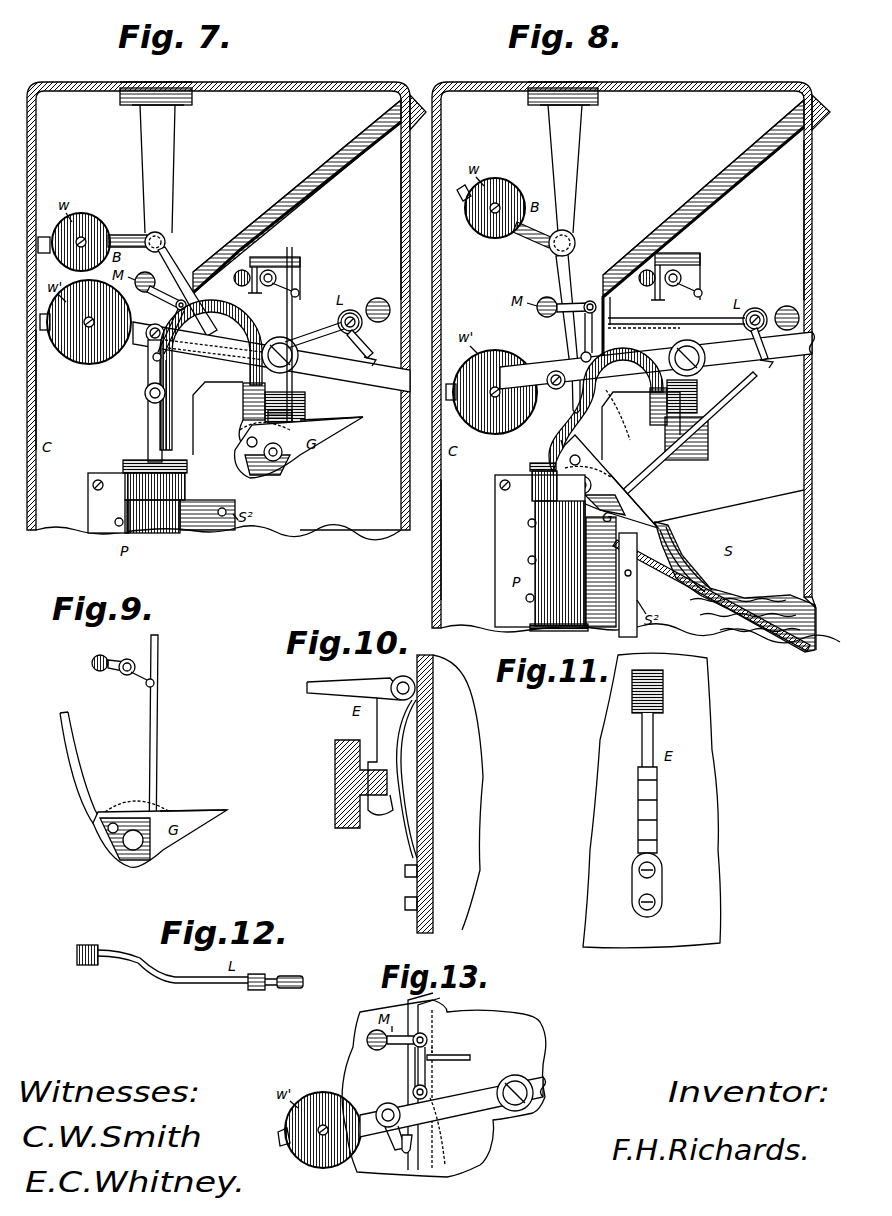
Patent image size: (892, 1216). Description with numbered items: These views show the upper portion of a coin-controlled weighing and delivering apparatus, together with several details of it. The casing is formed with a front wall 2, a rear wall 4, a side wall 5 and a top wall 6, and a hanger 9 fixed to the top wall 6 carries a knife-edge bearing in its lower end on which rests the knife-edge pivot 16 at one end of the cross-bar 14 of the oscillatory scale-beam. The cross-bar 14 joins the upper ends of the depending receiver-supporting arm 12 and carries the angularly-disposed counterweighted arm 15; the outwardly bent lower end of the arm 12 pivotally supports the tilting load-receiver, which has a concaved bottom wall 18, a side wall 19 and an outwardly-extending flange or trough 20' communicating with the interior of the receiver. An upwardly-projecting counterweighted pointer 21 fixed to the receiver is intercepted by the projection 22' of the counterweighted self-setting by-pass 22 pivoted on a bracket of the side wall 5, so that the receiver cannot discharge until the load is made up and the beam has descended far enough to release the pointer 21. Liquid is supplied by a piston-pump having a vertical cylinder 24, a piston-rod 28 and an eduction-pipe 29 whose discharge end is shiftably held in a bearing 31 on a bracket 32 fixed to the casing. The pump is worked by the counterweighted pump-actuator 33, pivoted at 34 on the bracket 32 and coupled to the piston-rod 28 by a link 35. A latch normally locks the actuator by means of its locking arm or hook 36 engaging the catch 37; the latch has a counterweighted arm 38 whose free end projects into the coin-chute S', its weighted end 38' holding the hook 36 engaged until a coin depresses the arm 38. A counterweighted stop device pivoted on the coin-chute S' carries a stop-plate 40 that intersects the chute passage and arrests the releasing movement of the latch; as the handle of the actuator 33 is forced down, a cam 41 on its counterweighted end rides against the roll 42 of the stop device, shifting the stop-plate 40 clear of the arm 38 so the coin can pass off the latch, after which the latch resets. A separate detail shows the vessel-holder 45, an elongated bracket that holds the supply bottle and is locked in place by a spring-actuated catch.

In FIG. 7, the front wall 2 is at (401, 208).
In FIG. 8, the front wall 2 is at (804, 216).
In FIG. 7, the rear wall 4 is at (37, 370).
In FIG. 8, the rear wall 4 is at (441, 500).
In FIG. 10, the rear wall 4 is at (441, 793).
In FIG. 11, the rear wall 4 is at (706, 800).
In FIG. 7, the side wall 5 is at (357, 529).
In FIG. 8, the side wall 5 is at (742, 642).
In FIG. 13, the side wall 5 is at (520, 1038).
In FIG. 7, the top wall 6 is at (246, 86).
In FIG. 8, the top wall 6 is at (664, 86).
In FIG. 7, the hanger 9 is at (168, 146).
In FIG. 8, the hanger 9 is at (578, 150).
In FIG. 7, the receiver-supporting arm 12 is at (236, 424).
In FIG. 8, the receiver-supporting arm 12 is at (555, 430).
In FIG. 9, the receiver-supporting arm 12 is at (76, 762).
In FIG. 7, the cross-bar 14 is at (160, 236).
In FIG. 8, the cross-bar 14 is at (567, 238).
In FIG. 7, the counterweighted arm 15 is at (118, 236).
In FIG. 8, the counterweighted arm 15 is at (528, 236).
In FIG. 7, the knife-edge pivot 16 is at (162, 244).
In FIG. 8, the knife-edge pivot 16 is at (573, 246).
In FIG. 7, the concaved bottom wall 18 is at (287, 466).
In FIG. 8, the concaved bottom wall 18 is at (575, 498).
In FIG. 9, the concaved bottom wall 18 is at (165, 846).
In FIG. 7, the side wall 19 is at (345, 428).
In FIG. 8, the side wall 19 is at (633, 513).
In FIG. 9, the side wall 19 is at (192, 818).
In FIG. 7, the flange or trough 20' is at (239, 463).
In FIG. 8, the flange or trough 20' is at (604, 451).
In FIG. 9, the flange or trough 20' is at (97, 844).
In FIG. 7, the pointer 21 is at (293, 262).
In FIG. 8, the pointer 21 is at (740, 392).
In FIG. 9, the pointer 21 is at (157, 760).
In FIG. 7, the by-pass 22 is at (271, 261).
In FIG. 8, the by-pass 22 is at (669, 264).
In FIG. 9, the by-pass 22 is at (120, 675).
In FIG. 7, the projection 22' is at (306, 279).
In FIG. 8, the projection 22' is at (709, 283).
In FIG. 9, the projection 22' is at (134, 697).
In FIG. 7, the cylinder 24 is at (150, 534).
In FIG. 8, the cylinder 24 is at (528, 560).
In FIG. 7, the piston-rod 28 is at (148, 422).
In FIG. 7, the eduction-pipe 29 is at (163, 442).
In FIG. 7, the bearing 31 is at (243, 398).
In FIG. 8, the bearing 31 is at (650, 398).
In FIG. 7, the bracket 32 is at (265, 425).
In FIG. 7, the pump-actuator 33 is at (384, 380).
In FIG. 8, the pump-actuator 33 is at (704, 338).
In FIG. 13, the pump-actuator 33 is at (486, 1112).
In FIG. 7, the pivot 34 is at (292, 365).
In FIG. 8, the pivot 34 is at (674, 350).
In FIG. 13, the pivot 34 is at (516, 1080).
In FIG. 7, the link 35 is at (150, 340).
In FIG. 8, the link 35 is at (553, 388).
In FIG. 13, the link 35 is at (388, 1140).
In FIG. 7, the locking arm or hook 36 is at (366, 350).
In FIG. 8, the locking arm or hook 36 is at (770, 356).
In FIG. 7, the catch 37 is at (348, 332).
In FIG. 8, the catch 37 is at (748, 330).
In FIG. 7, the counterweighted arm 38 is at (319, 329).
In FIG. 8, the counterweighted arm 38 is at (676, 311).
In FIG. 12, the counterweighted arm 38 is at (162, 972).
In FIG. 13, the counterweighted arm 38 is at (457, 1044).
In FIG. 7, the counterweighted end 38' is at (378, 298).
In FIG. 8, the counterweighted end 38' is at (784, 304).
In FIG. 12, the counterweighted end 38' is at (290, 968).
In FIG. 7, the stop-plate 40 is at (152, 356).
In FIG. 8, the stop-plate 40 is at (581, 358).
In FIG. 13, the stop-plate 40 is at (413, 1092).
In FIG. 7, the cam 41 is at (146, 398).
In FIG. 8, the cam 41 is at (563, 448).
In FIG. 13, the cam 41 is at (406, 1152).
In FIG. 7, the roll 42 is at (155, 362).
In FIG. 8, the roll 42 is at (582, 352).
In FIG. 13, the roll 42 is at (416, 1088).
In FIG. 10, the vessel-holder 45 is at (335, 774).
In FIG. 7, the coin-chute S' is at (297, 196).
In FIG. 8, the coin-chute S' is at (703, 230).
In FIG. 13, the coin-chute S' is at (418, 1078).